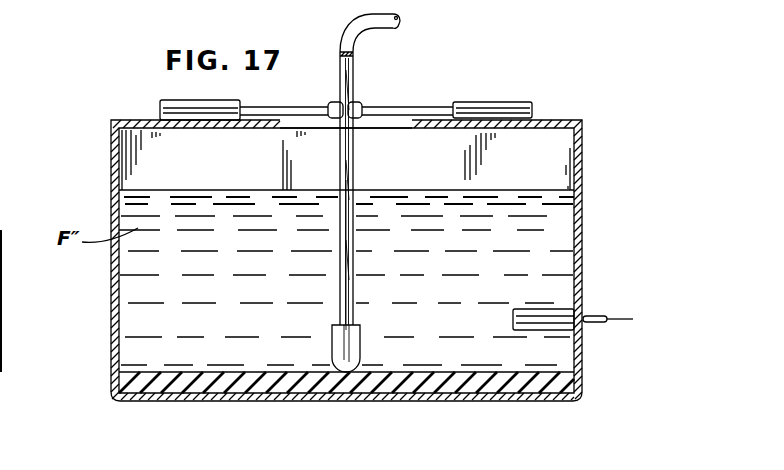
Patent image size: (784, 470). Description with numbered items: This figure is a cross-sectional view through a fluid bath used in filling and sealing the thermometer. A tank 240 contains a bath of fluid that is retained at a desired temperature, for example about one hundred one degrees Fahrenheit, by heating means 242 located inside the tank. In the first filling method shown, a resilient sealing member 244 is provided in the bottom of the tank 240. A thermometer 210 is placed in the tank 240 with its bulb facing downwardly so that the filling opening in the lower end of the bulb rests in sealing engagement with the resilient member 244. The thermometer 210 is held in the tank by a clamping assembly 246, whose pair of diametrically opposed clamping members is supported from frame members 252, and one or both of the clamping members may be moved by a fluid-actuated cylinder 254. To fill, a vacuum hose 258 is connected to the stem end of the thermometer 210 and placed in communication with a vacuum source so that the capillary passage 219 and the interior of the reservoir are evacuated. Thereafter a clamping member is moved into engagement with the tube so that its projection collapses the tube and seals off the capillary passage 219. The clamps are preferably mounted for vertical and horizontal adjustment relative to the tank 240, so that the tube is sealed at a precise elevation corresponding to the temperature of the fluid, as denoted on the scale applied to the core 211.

The tank 240 is at (96, 147).
The resilient sealing member 244 is at (273, 383).
The frame members 252 is at (133, 120).
The fluid-actuated cylinder 254 is at (490, 102).
The clamping assembly 246 is at (374, 86).
The vacuum hose 258 is at (373, 25).
The thermometer 210 is at (364, 170).
The capillary passage 219 is at (347, 185).
The heating means 242 is at (545, 318).
The core 211 is at (3, 370).